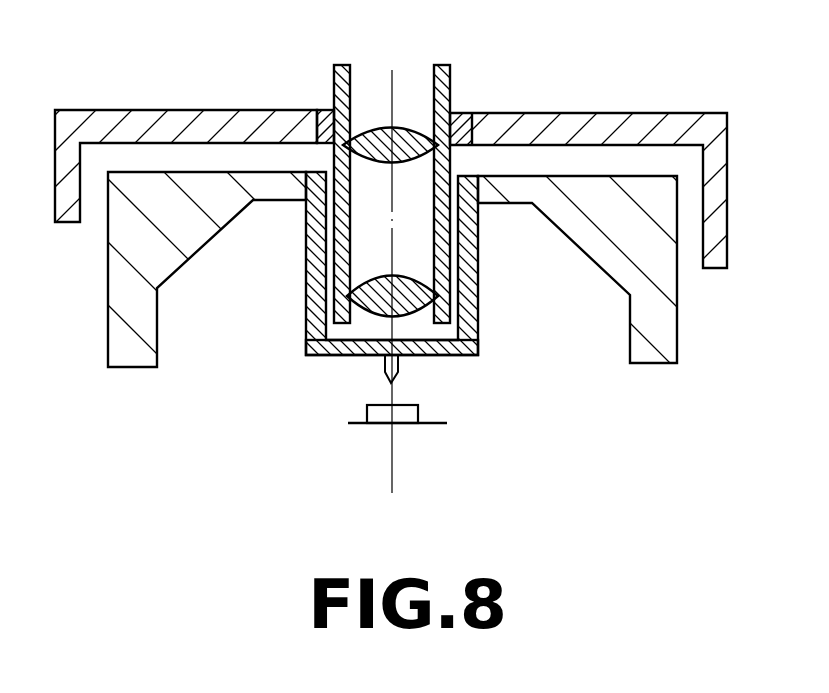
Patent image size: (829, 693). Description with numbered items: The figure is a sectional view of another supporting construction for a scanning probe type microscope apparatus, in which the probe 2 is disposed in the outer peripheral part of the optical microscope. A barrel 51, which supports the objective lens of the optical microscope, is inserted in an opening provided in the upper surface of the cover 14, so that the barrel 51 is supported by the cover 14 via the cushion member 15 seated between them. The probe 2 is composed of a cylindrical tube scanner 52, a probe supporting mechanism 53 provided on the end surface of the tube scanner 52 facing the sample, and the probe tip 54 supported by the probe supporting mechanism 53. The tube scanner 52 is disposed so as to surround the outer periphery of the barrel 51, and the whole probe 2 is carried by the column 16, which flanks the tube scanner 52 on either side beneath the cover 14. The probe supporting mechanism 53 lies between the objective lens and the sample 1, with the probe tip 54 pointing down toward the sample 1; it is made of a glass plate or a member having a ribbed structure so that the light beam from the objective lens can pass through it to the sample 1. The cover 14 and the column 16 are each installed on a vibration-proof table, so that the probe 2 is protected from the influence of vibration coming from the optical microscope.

The sample 1 is at (380, 417).
The probe 2 is at (414, 346).
The cover 14 is at (133, 127).
The cushion member 15 is at (317, 110).
The column 16 is at (647, 210).
The barrel 51 is at (453, 167).
The tube scanner 52 is at (303, 255).
The probe supporting mechanism 53 is at (467, 355).
The probe tip 54 is at (400, 375).